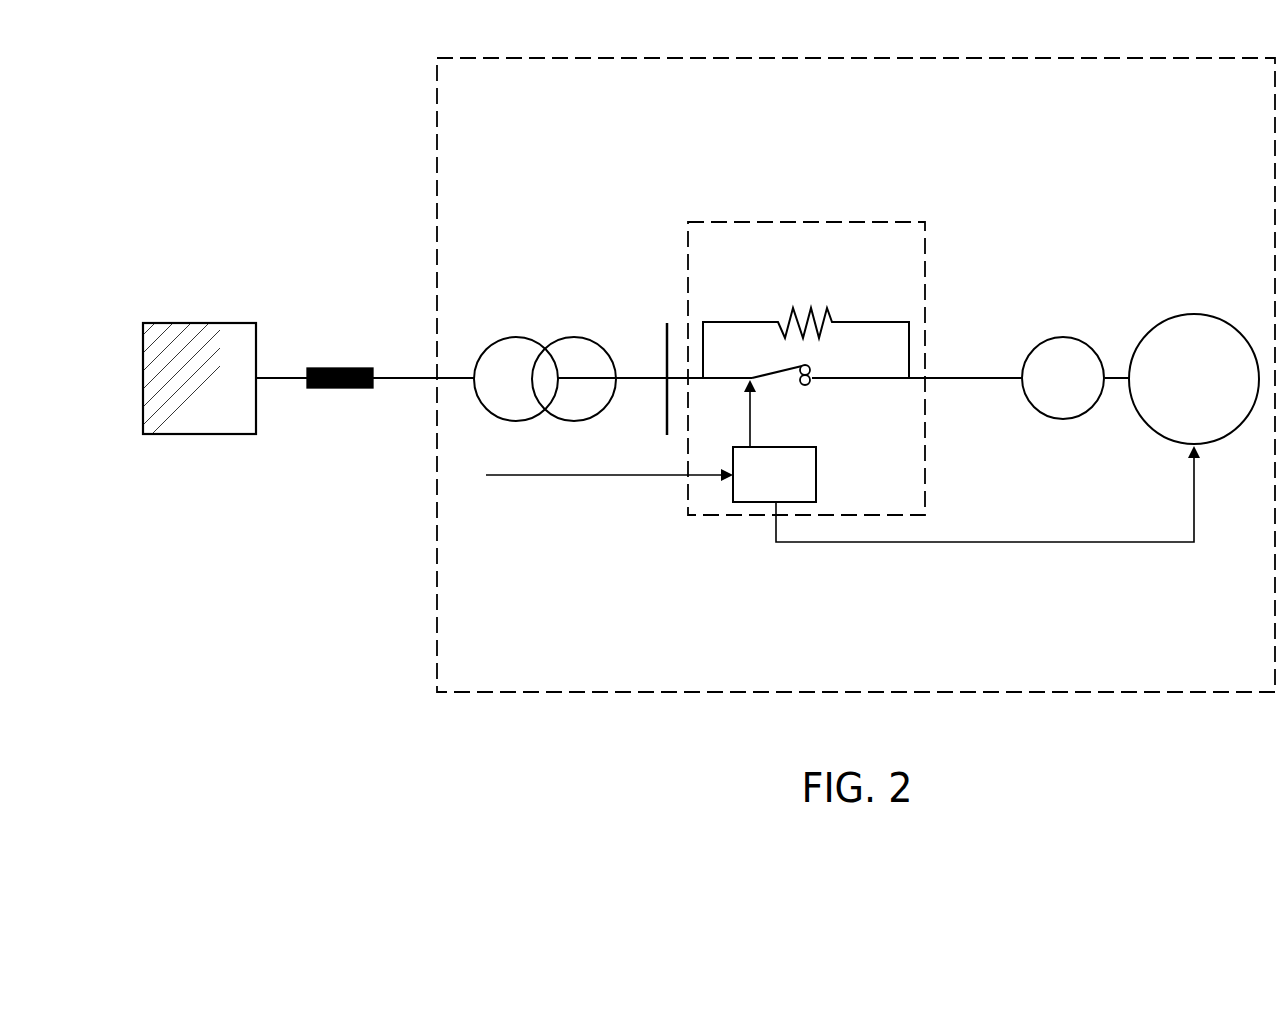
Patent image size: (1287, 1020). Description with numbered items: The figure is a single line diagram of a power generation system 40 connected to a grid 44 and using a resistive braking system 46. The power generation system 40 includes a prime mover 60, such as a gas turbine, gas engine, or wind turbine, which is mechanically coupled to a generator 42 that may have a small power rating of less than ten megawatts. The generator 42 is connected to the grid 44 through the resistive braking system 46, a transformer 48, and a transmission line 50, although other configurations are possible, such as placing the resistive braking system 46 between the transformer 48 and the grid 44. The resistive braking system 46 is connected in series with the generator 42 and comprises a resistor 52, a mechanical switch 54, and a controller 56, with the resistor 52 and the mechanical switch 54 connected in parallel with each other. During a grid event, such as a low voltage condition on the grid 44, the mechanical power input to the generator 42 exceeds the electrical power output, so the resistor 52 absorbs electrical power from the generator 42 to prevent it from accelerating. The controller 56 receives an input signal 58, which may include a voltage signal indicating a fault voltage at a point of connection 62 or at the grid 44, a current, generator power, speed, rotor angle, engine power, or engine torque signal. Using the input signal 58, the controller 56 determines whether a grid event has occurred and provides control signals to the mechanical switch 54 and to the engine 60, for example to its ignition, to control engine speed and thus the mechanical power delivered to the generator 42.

The power generation system 40 is at (1185, 116).
The generator 42 is at (1063, 337).
The grid 44 is at (203, 323).
The resistive braking system 46 is at (832, 222).
The transformer 48 is at (517, 338).
The transmission line 50 is at (340, 368).
The resistor 52 is at (815, 322).
The mechanical switch 54 is at (772, 374).
The controller 56 is at (740, 503).
The input signal 58 is at (588, 478).
The prime mover 60 is at (1194, 315).
The point of connection 62 is at (665, 335).